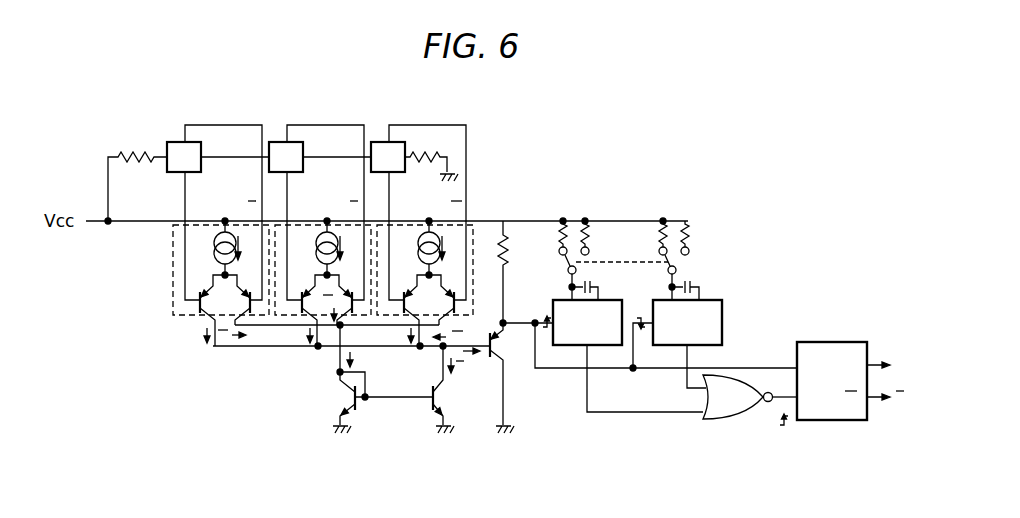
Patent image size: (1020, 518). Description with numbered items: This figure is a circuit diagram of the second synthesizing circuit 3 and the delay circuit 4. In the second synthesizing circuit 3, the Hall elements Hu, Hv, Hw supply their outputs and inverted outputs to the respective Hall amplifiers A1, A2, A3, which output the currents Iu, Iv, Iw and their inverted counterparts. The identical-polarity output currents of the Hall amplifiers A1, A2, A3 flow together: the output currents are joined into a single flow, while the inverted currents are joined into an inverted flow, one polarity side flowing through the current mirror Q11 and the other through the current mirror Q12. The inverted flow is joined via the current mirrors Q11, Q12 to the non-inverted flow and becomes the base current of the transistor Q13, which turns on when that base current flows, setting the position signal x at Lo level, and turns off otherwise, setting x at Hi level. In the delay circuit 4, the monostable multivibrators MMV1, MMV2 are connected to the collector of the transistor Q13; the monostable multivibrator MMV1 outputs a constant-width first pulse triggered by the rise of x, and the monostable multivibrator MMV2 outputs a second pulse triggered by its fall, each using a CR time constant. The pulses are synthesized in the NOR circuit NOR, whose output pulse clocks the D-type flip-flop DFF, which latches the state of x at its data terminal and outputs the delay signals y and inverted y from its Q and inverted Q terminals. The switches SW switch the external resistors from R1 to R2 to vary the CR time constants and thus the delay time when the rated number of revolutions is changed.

The second synthesizing circuit 3 is at (514, 447).
The delay circuit 4 is at (788, 257).
The Hall amplifier A1 is at (218, 235).
The Hall amplifier A2 is at (320, 235).
The Hall amplifier A3 is at (422, 235).
The Hall element Hu is at (184, 157).
The Hall element Hv is at (286, 157).
The Hall element Hw is at (388, 157).
The current mirror Q11 is at (372, 379).
The current mirror Q12 is at (460, 389).
The transistor Q13 is at (512, 327).
The external resistor R1 is at (603, 232).
The external resistor R2 is at (644, 232).
The switch SW is at (624, 267).
The monostable multivibrator MMV1 is at (582, 322).
The monostable multivibrator MMV2 is at (679, 322).
The NOR circuit NOR is at (738, 397).
The D-type flip-flop DFF is at (823, 372).